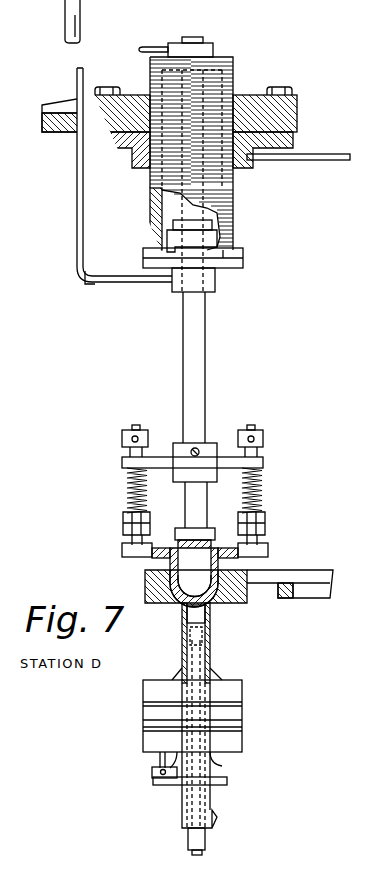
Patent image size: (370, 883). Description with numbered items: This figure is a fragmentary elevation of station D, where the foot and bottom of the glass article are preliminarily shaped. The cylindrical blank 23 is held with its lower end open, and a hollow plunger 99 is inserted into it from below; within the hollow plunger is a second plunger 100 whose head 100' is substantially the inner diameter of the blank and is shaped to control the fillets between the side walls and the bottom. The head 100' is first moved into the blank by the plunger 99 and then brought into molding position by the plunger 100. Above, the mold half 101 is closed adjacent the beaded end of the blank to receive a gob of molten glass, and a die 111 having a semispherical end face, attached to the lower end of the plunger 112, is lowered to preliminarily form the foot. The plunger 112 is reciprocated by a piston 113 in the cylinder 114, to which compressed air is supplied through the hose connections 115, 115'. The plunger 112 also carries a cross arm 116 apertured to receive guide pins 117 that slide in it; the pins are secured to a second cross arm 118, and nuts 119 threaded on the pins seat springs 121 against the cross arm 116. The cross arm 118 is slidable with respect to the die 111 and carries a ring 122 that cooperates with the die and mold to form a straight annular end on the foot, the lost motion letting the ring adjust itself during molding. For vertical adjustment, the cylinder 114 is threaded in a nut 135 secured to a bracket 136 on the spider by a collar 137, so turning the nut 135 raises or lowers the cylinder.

The hose connection 115' is at (157, 37).
The bracket 136 is at (297, 106).
The collar 137 is at (293, 141).
The nut 135 is at (241, 166).
The hose connection 115 is at (105, 176).
The cylinder 114 is at (235, 213).
The piston 113 is at (172, 237).
The plunger 112 is at (200, 345).
The cross arm 116 is at (223, 460).
The guide pins 117 is at (128, 451).
The springs 121 is at (128, 500).
The nuts 119 is at (265, 527).
The second cross arm 118 is at (268, 550).
The ring 122 is at (225, 567).
The mold half 101 is at (145, 578).
The die 111 is at (185, 592).
The head 100' is at (220, 617).
The cylindrical blank 23 is at (211, 652).
The hollow plunger 99 is at (188, 837).
The second plunger 100 is at (219, 852).